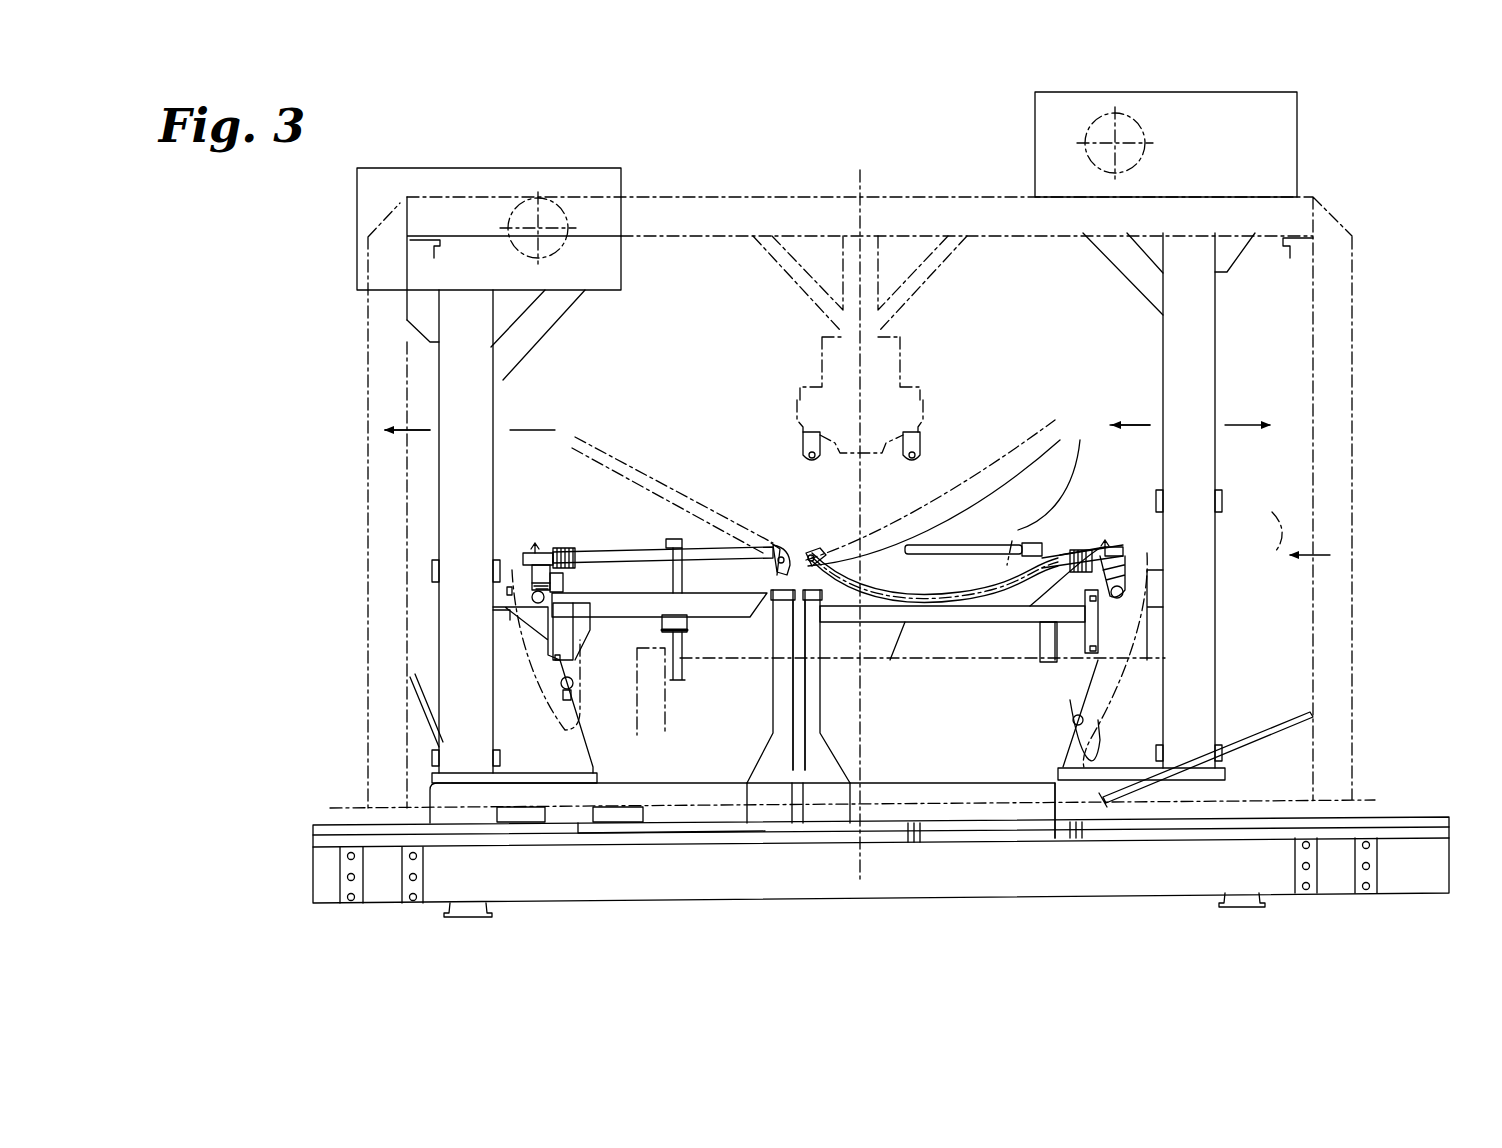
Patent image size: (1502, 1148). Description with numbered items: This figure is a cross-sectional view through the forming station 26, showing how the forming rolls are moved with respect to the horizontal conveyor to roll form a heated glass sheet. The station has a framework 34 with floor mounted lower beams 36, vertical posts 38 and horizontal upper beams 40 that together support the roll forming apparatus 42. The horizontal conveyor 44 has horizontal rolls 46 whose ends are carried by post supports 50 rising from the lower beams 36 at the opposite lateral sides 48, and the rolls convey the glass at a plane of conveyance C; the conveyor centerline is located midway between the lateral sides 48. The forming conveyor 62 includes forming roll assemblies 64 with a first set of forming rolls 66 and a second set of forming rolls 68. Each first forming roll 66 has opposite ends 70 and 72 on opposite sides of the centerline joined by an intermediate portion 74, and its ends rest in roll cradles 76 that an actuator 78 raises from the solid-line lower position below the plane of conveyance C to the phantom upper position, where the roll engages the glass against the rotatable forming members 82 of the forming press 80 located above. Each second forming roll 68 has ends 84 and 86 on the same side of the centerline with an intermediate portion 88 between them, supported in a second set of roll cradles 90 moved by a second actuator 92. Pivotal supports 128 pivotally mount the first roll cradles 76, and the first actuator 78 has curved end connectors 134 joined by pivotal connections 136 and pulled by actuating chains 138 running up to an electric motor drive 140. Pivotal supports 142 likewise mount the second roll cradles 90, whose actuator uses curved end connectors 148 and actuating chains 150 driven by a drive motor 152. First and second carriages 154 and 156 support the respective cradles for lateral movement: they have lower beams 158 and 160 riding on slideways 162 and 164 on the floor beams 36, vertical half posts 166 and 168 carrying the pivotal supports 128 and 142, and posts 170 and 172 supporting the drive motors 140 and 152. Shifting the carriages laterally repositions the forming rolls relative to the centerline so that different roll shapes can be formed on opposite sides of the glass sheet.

The forming station 26 is at (1372, 166).
The framework 34 is at (1355, 236).
The lower beams 36 is at (1020, 897).
The vertical posts 38 is at (368, 470).
The horizontal upper beams 40 is at (735, 196).
The roll forming apparatus 42 is at (782, 332).
The horizontal conveyor 44 is at (975, 570).
The horizontal rolls 46 is at (945, 590).
The lateral sides 48 is at (672, 540).
The post supports 50 is at (667, 707).
The forming conveyor 62 is at (742, 478).
The forming roll assemblies 64 is at (1127, 537).
The first set of forming rolls 66 is at (1057, 553).
The second set of forming rolls 68 is at (635, 480).
The end 70 is at (812, 548).
The end 72 is at (1040, 455).
The intermediate portion 74 is at (1010, 520).
The roll cradles 76 is at (945, 626).
The actuator 78 is at (1150, 575).
The forming press 80 is at (908, 358).
The rotatable forming members 82 is at (805, 445).
The end 84 is at (779, 540).
The end 86 is at (557, 535).
The intermediate portion 88 is at (697, 572).
The second set of roll cradles 90 is at (705, 612).
The second actuator 92 is at (522, 560).
The pivotal supports 128 is at (905, 625).
The curved end connectors 134 is at (1108, 660).
The pivotal connections 136 is at (1118, 600).
The actuating chains 138 is at (1115, 345).
The electric motor drive 140 is at (1140, 540).
The pivotal supports 142 is at (773, 560).
The curved end connectors 148 is at (436, 623).
The actuating chains 150 is at (550, 345).
The drive motor 152 is at (520, 555).
The first carriage 154 is at (1290, 555).
The second carriage 156 is at (500, 692).
The lower beam 158 is at (985, 805).
The lower beam 160 is at (550, 805).
The slideway 162 is at (1055, 840).
The slideway 164 is at (615, 830).
The vertical half post 166 is at (830, 690).
The vertical half post 168 is at (778, 690).
The post 170 is at (1200, 390).
The post 172 is at (450, 380).
The plane of conveyance C is at (1008, 535).